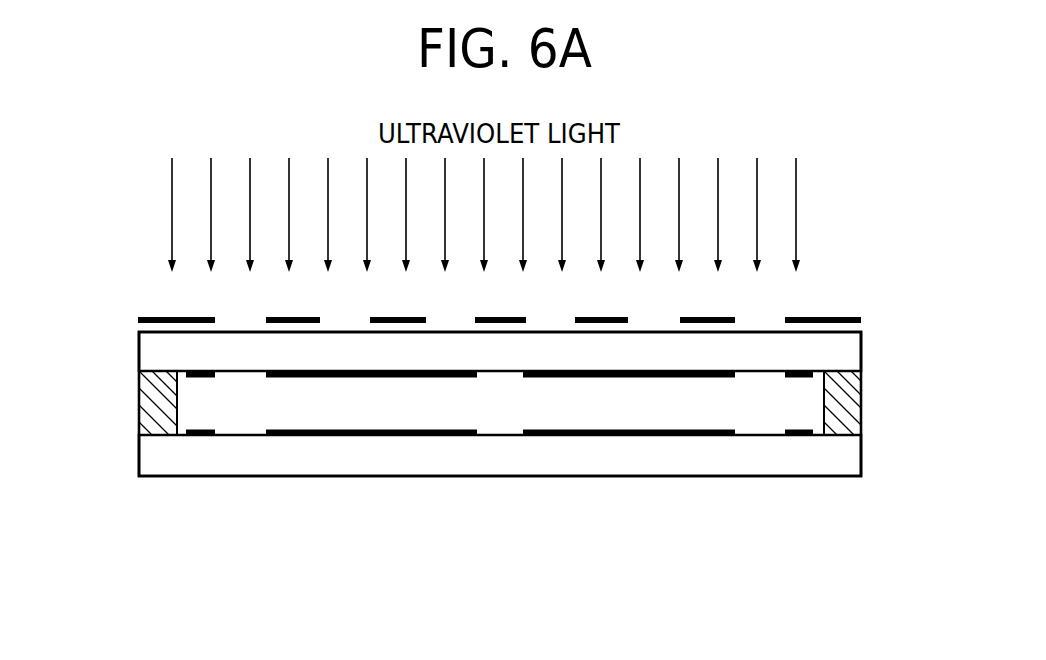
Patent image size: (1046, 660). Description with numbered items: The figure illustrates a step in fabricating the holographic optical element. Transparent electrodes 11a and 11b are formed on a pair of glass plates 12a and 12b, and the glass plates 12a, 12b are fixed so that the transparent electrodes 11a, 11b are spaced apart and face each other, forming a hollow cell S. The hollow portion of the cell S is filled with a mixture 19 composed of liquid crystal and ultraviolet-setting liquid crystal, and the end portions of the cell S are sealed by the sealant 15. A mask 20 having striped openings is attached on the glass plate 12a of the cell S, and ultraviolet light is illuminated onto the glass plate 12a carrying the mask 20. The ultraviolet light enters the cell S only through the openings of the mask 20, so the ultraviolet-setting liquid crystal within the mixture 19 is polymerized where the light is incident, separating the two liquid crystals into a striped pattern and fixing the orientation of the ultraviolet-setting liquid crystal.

The mask 20 is at (840, 317).
The glass plate 12a is at (152, 348).
The glass plate 12b is at (152, 452).
The sealant 15 is at (152, 403).
The mixture 19 is at (235, 404).
The transparent electrode 11a is at (800, 374).
The transparent electrode 11b is at (800, 437).
The cell S is at (838, 500).